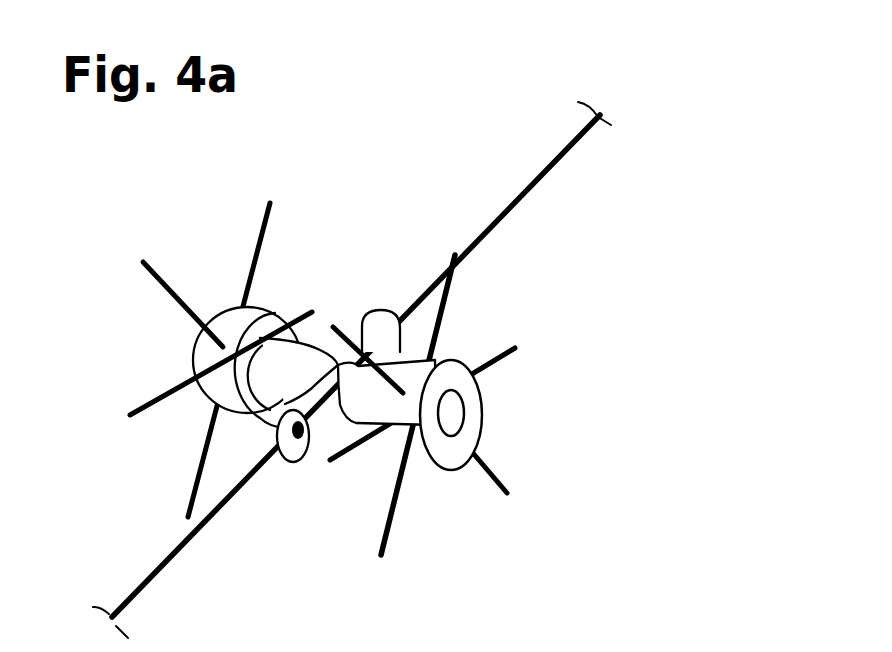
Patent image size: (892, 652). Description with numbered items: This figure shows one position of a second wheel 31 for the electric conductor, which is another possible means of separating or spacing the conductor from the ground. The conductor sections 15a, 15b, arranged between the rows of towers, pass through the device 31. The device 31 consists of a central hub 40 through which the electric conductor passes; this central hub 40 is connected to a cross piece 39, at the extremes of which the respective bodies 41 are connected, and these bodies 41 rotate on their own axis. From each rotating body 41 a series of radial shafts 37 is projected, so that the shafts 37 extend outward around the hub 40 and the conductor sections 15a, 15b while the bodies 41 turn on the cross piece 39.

The conductor section 15a is at (537, 174).
The conductor section 15b is at (418, 405).
The second wheel 31 is at (558, 430).
The radial shaft 37 is at (147, 402).
The cross piece 39 is at (298, 345).
The central hub 40 is at (377, 310).
The rotating body 41 is at (226, 306).